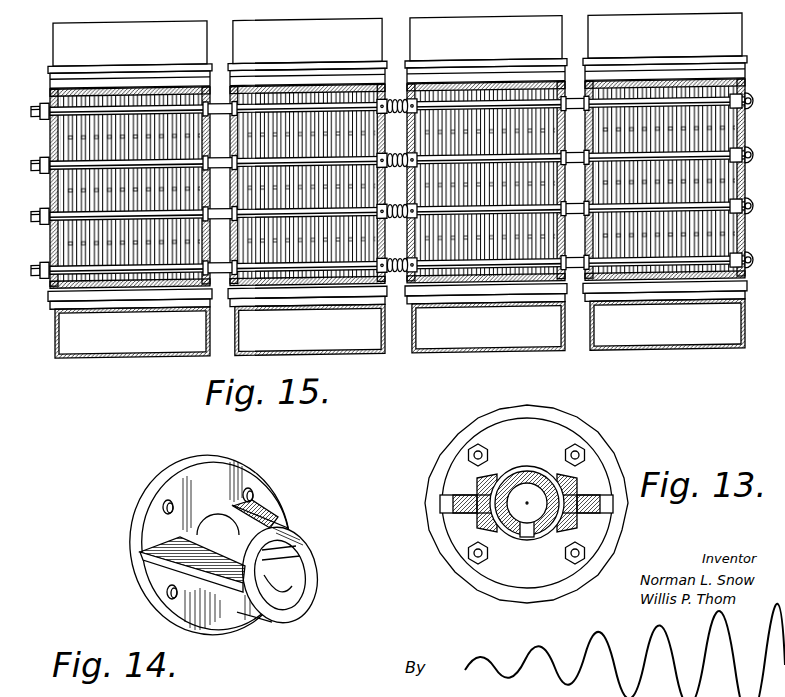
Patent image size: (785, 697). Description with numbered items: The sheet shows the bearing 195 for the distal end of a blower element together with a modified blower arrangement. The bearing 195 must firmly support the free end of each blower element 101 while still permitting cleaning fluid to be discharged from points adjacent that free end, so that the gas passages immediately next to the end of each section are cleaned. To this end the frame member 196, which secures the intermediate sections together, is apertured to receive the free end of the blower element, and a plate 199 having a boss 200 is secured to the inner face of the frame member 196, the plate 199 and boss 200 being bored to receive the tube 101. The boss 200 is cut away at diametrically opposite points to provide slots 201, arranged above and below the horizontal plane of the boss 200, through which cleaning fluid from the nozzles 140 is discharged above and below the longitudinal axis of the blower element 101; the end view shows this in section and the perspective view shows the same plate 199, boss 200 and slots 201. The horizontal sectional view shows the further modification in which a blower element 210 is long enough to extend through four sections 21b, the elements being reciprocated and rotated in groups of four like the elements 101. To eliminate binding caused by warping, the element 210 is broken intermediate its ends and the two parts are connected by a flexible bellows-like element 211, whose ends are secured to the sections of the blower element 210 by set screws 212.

In FIG. 15, the blower element 210 is at (92, 279).
In FIG. 15, the sections 21b is at (147, 342).
In FIG. 15, the flexible bellows-like element 211 is at (402, 278).
In FIG. 15, the set screws 212 is at (418, 283).
In FIG. 13, the bearing 195 is at (548, 446).
In FIG. 14, the bearing 195 is at (221, 481).
In FIG. 13, the frame member 196 is at (566, 424).
In FIG. 13, the plate 199 is at (462, 534).
In FIG. 14, the plate 199 is at (262, 503).
In FIG. 13, the boss 200 is at (574, 526).
In FIG. 14, the boss 200 is at (273, 528).
In FIG. 13, the slots 201 is at (552, 534).
In FIG. 14, the slots 201 is at (217, 528).
In FIG. 13, the blower element 101 is at (513, 541).
In FIG. 13, the nozzles 140 is at (533, 540).